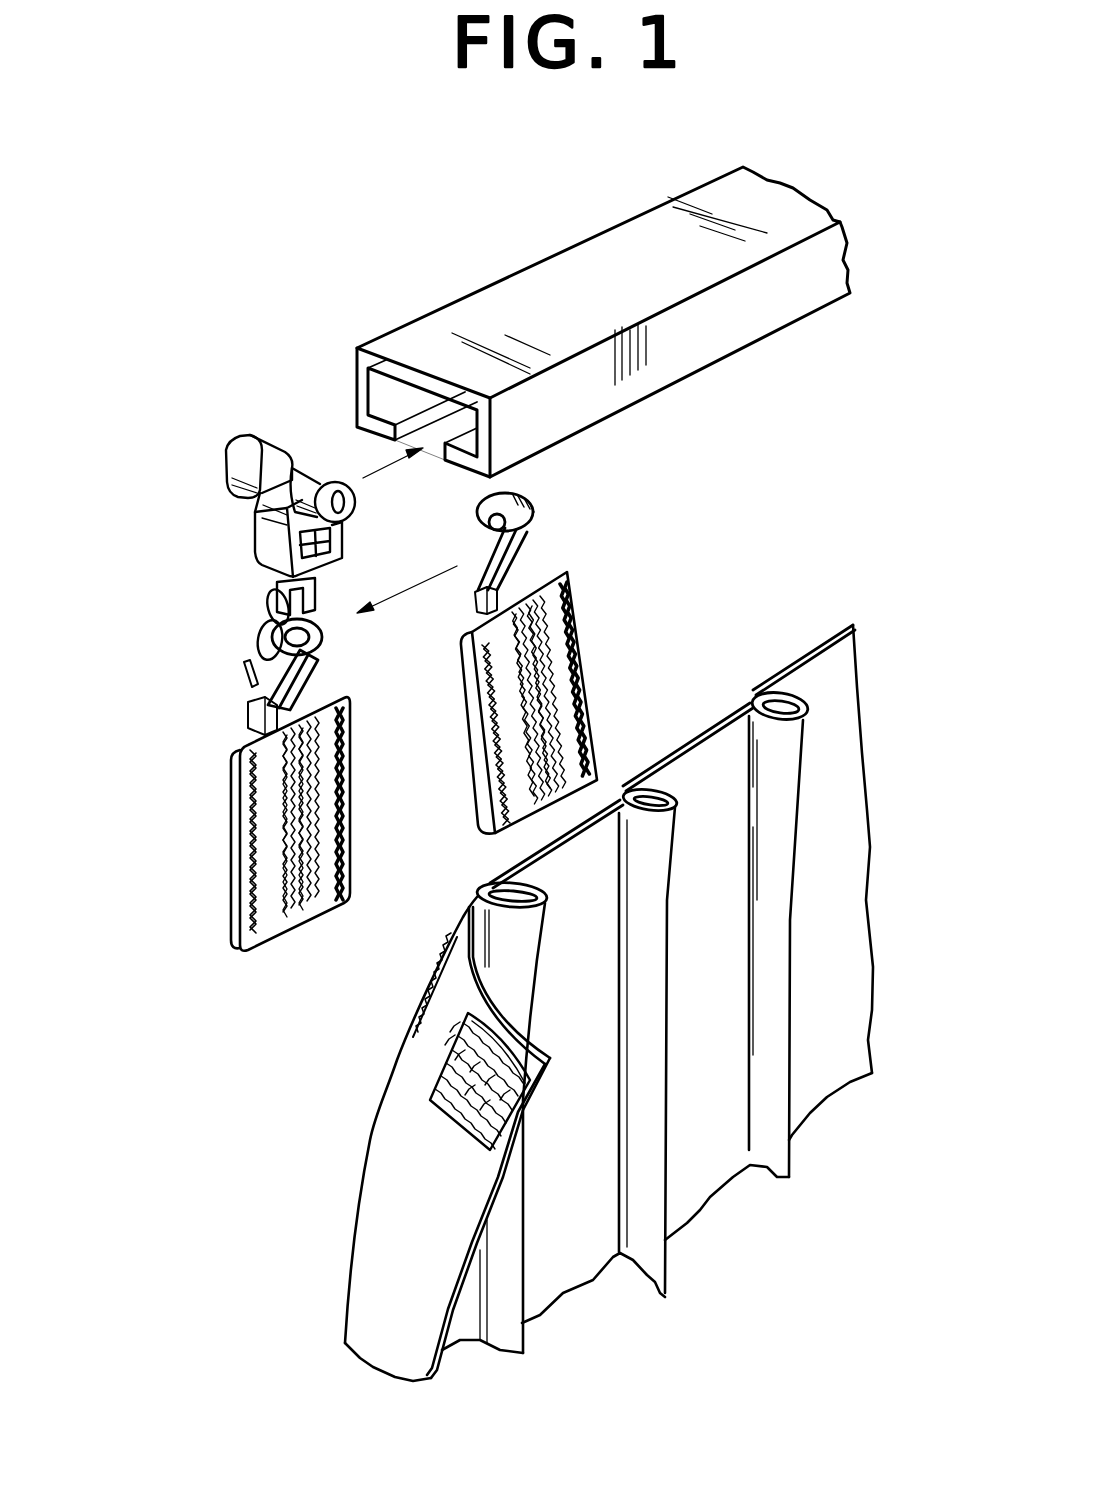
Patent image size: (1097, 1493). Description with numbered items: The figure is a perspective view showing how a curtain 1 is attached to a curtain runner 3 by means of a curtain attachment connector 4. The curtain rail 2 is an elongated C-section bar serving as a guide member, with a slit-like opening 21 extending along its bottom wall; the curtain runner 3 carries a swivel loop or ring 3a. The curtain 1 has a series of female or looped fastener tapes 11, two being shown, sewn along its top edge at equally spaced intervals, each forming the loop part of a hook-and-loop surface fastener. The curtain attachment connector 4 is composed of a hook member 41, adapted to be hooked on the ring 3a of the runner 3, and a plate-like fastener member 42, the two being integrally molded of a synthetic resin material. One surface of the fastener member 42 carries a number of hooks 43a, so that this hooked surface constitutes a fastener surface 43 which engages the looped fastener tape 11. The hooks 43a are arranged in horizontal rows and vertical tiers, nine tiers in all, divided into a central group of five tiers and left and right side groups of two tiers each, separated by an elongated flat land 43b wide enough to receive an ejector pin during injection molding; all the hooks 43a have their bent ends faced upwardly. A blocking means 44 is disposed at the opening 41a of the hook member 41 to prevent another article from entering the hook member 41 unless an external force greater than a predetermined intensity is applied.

The curtain 1 is at (374, 1081).
The looped fastener tape 11 is at (453, 1127).
The curtain rail 2 is at (700, 371).
The slit-like opening 21 is at (444, 434).
The curtain runner 3 is at (247, 538).
The swivel loop or ring 3a is at (265, 612).
The curtain attachment connector 4 is at (225, 968).
The hook member 41 is at (332, 657).
The opening 41a is at (263, 681).
The plate-like fastener member 42 is at (224, 878).
The fastener surface 43 is at (282, 793).
The hooks 43a is at (318, 905).
The elongated flat land 43b is at (272, 920).
The blocking means 44 is at (242, 670).